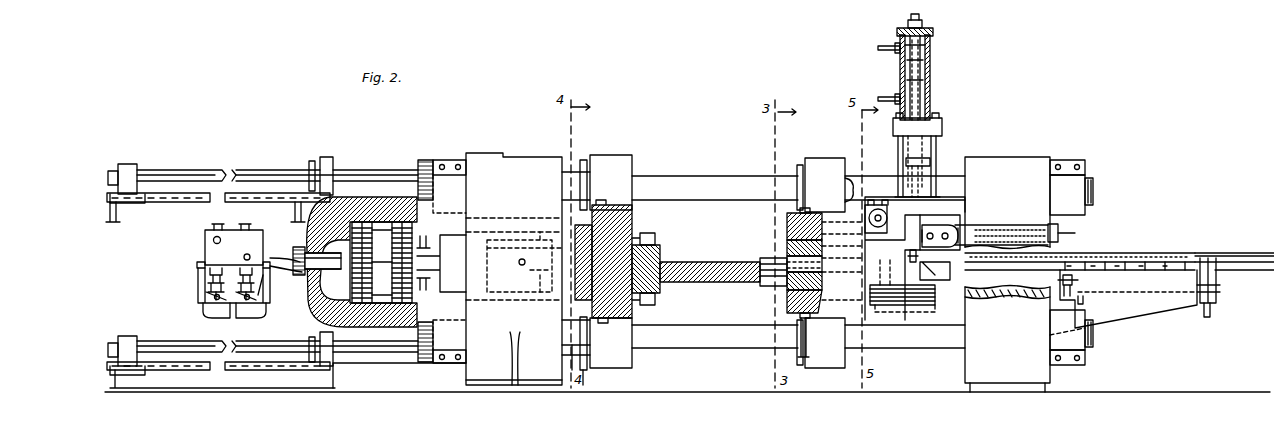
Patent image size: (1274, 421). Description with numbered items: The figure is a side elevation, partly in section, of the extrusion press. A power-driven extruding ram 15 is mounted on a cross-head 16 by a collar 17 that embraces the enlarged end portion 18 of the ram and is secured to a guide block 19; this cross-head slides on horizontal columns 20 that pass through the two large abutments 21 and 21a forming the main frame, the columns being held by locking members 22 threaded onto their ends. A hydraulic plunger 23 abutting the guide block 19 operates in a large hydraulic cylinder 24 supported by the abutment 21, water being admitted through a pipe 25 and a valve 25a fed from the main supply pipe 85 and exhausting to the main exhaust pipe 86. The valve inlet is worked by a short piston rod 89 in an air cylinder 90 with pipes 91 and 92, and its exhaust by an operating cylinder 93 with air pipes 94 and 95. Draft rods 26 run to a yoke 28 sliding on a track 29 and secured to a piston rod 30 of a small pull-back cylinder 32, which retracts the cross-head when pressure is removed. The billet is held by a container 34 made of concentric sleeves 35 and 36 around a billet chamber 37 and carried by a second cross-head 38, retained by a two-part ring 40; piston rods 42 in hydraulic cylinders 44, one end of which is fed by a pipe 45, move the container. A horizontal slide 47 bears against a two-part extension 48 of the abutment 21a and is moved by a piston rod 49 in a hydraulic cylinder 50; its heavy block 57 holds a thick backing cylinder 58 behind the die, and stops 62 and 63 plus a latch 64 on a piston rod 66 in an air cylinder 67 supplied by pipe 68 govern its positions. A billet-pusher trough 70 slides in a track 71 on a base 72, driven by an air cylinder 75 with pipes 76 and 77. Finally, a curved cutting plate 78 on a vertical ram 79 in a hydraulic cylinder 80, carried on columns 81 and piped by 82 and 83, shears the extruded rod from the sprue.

The extruding ram 15 is at (700, 260).
The cross-head 16 is at (624, 156).
The collar 17 is at (652, 258).
The enlarged end portion 18 is at (655, 288).
The guide block 19 is at (614, 215).
The horizontal columns 20 is at (798, 262).
The abutment 21 is at (514, 269).
The abutment 21a is at (1007, 274).
The locking members 22 is at (1071, 262).
The hydraulic plunger 23 is at (378, 225).
The hydraulic cylinder 24 is at (340, 200).
The pipe 25 is at (300, 270).
The valve 25a is at (205, 243).
The draft rods 26 is at (283, 166).
The yoke 28 is at (128, 165).
The track 29 is at (178, 200).
The piston rod 30 is at (233, 170).
The pull-back cylinder 32 is at (425, 160).
The container 34 is at (787, 278).
The inner cylindrical sleeve 35 is at (785, 292).
The outer cylindrical sleeve 36 is at (787, 222).
The billet chamber 37 is at (804, 263).
The cross-head 38 is at (825, 263).
The two-part ring 40 is at (787, 317).
The piston rods 42 is at (540, 277).
The hydraulic cylinders 44 is at (441, 263).
The pipe 45 is at (519, 261).
The slide 47 is at (860, 243).
The abutment extension 48 is at (890, 212).
The piston rod 49 is at (858, 225).
The hydraulic cylinder 50 is at (880, 208).
The block 57 is at (908, 290).
The cylinder 58 is at (862, 292).
The stop 62 is at (900, 40).
The stop 63 is at (917, 258).
The latch 64 is at (937, 225).
The piston rod 66 is at (966, 232).
The air cylinder 67 is at (1018, 230).
The pipe 68 is at (1075, 233).
The trough 70 is at (1249, 254).
The track 71 is at (1143, 260).
The base 72 is at (1127, 299).
The air cylinder 75 is at (1216, 285).
The air pipe 76 is at (1084, 302).
The air pipe 77 is at (1210, 312).
The curved cutting plate 78 is at (935, 275).
The vertically reciprocating ram 79 is at (936, 128).
The hydraulic cylinder 80 is at (932, 88).
The columns 81 is at (898, 158).
The pipe 82 is at (884, 52).
The pipe 83 is at (884, 90).
The main supply pipe 85 is at (219, 237).
The main exhaust pipe 86 is at (244, 257).
The piston rod 89 is at (213, 281).
The air cylinder 90 is at (205, 312).
The air pipe 91 is at (208, 291).
The air pipe 92 is at (215, 298).
The air cylinder 93 is at (262, 312).
The air pipe 94 is at (252, 297).
The air pipe 95 is at (262, 280).